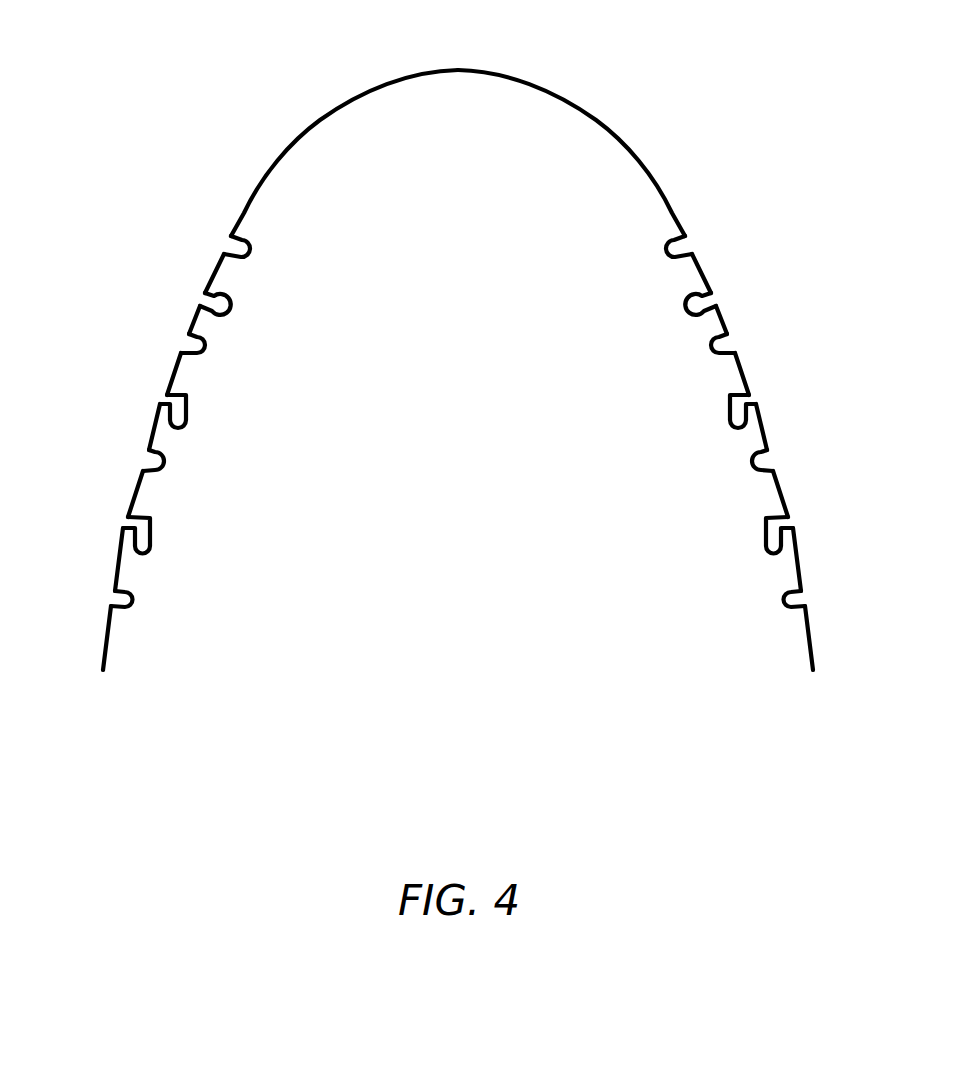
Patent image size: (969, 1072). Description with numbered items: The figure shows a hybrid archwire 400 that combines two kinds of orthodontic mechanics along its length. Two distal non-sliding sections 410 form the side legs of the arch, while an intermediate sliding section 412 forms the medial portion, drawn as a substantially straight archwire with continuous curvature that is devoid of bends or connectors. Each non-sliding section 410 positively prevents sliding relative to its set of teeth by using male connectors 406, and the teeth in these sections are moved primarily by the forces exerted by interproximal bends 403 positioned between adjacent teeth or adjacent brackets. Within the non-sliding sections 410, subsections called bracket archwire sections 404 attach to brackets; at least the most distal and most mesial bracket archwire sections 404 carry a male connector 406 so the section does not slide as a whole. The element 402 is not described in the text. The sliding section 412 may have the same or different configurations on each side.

The hybrid archwire 400 is at (521, 80).
The hook loop 402 is at (748, 512).
The interproximal bend 403 is at (233, 307).
The bracket archwire section 404 is at (766, 579).
The male connector 406 is at (201, 353).
The non-sliding section 410 is at (217, 232).
The sliding section 412 is at (645, 238).